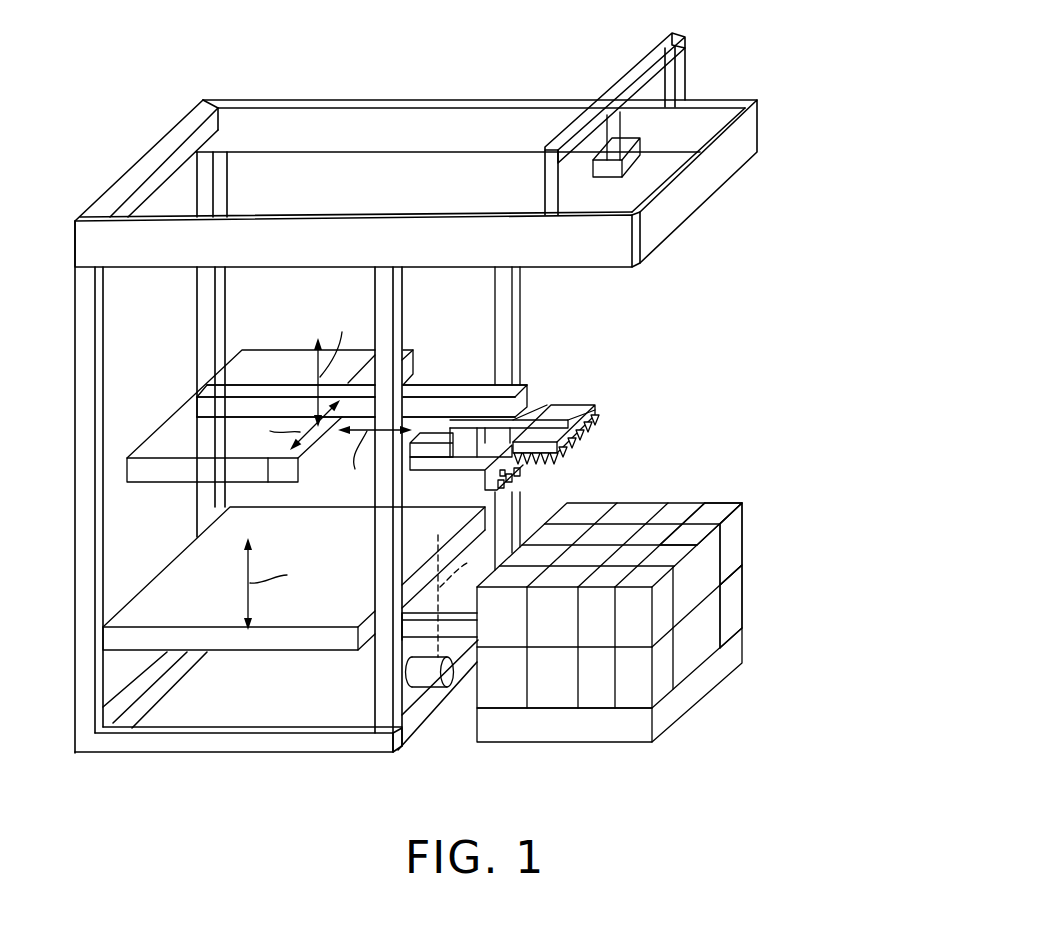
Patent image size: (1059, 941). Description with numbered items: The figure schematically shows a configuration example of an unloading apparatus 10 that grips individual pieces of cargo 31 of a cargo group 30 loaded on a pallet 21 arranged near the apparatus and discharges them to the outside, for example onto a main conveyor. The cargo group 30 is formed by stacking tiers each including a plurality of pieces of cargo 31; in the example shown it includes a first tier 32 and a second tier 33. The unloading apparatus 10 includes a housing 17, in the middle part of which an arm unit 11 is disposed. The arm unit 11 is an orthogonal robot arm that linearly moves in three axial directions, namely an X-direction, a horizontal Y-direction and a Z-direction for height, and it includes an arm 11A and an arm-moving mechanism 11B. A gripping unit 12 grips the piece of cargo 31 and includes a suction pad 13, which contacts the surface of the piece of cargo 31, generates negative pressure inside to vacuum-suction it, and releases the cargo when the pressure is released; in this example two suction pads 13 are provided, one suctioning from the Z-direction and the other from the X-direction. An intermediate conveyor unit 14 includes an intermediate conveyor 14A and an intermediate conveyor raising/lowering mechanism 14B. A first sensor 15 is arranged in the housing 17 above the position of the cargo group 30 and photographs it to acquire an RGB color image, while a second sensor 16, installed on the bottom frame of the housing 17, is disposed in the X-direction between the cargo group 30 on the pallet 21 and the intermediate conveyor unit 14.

The unloading apparatus 10 is at (862, 96).
The arm unit 11 is at (382, 418).
The arm 11A is at (440, 383).
The arm-moving mechanism 11B is at (362, 368).
The gripping unit 12 is at (524, 417).
The suction pad 13 is at (578, 452).
The intermediate conveyor unit 14 is at (294, 576).
The intermediate conveyor 14A is at (275, 653).
The intermediate conveyor raising/lowering mechanism 14B is at (294, 612).
The first sensor 15 is at (625, 163).
The second sensor 16 is at (433, 690).
The housing 17 is at (75, 389).
The pallet 21 is at (722, 680).
The cargo group 30 is at (675, 552).
The piece of cargo 31 is at (744, 536).
The first tier 32 is at (768, 503).
The second tier 33 is at (788, 592).